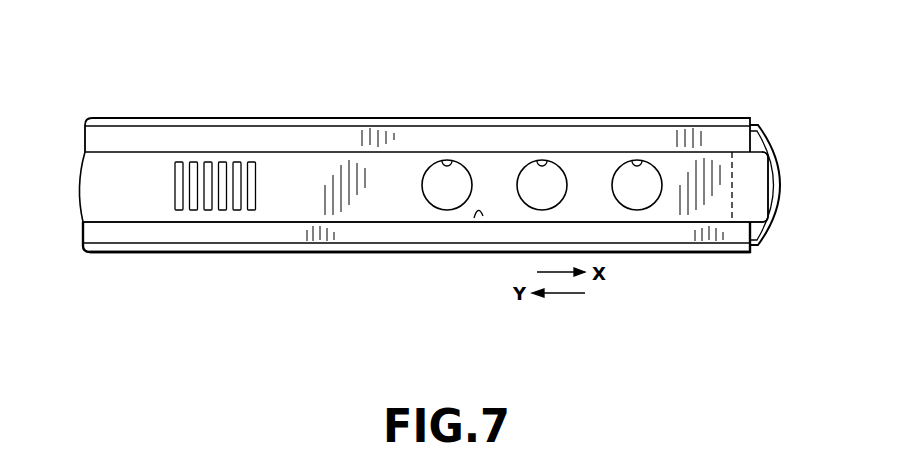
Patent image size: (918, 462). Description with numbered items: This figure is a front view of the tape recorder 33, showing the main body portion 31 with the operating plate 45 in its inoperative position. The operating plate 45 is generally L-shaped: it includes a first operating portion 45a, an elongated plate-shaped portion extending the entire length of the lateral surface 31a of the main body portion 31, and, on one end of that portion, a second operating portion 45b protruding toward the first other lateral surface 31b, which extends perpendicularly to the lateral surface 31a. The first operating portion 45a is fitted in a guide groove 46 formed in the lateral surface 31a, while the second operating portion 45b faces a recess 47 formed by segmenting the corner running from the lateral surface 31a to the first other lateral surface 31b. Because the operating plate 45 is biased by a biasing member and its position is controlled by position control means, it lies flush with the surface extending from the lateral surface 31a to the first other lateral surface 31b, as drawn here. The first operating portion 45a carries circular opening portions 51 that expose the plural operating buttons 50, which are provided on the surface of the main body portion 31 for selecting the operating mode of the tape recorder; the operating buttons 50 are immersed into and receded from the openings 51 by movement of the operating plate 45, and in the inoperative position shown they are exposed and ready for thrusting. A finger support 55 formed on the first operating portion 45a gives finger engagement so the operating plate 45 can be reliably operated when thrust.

The main body portion 31 is at (88, 232).
The lateral surface 31a is at (276, 232).
The first other lateral surface 31b is at (772, 129).
The cartridge / apparatus 33 is at (574, 118).
The operating plate 45 is at (358, 204).
The first operating portion 45a is at (229, 213).
The second operating portion 45b is at (780, 182).
The guide groove 46 is at (478, 219).
The recess 47 is at (732, 200).
The operating buttons 50 is at (448, 200).
The circular opening portion 51 is at (449, 164).
The finger support 55 is at (208, 176).